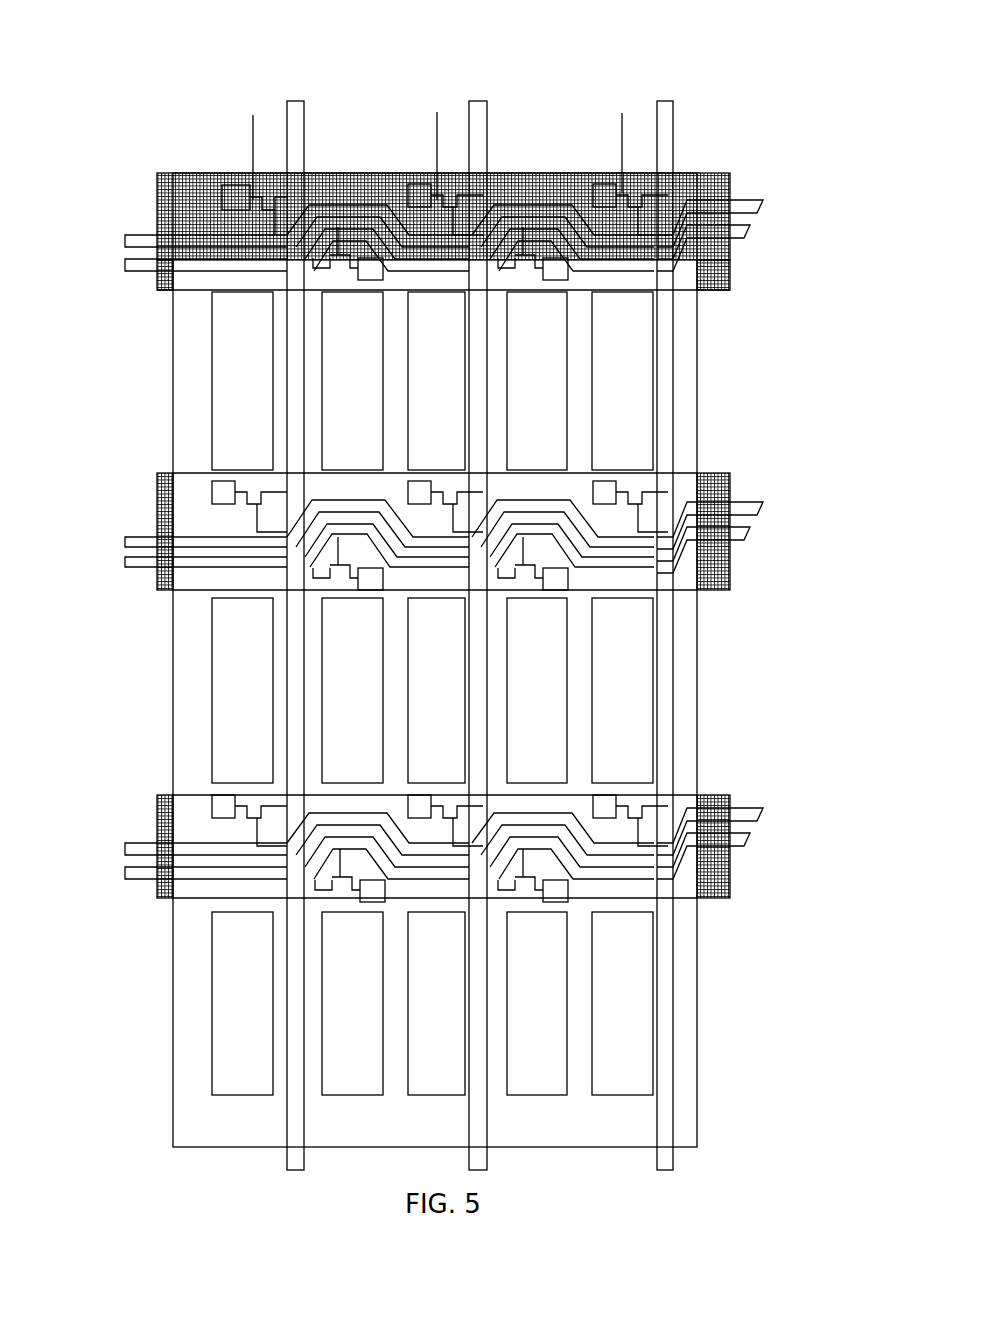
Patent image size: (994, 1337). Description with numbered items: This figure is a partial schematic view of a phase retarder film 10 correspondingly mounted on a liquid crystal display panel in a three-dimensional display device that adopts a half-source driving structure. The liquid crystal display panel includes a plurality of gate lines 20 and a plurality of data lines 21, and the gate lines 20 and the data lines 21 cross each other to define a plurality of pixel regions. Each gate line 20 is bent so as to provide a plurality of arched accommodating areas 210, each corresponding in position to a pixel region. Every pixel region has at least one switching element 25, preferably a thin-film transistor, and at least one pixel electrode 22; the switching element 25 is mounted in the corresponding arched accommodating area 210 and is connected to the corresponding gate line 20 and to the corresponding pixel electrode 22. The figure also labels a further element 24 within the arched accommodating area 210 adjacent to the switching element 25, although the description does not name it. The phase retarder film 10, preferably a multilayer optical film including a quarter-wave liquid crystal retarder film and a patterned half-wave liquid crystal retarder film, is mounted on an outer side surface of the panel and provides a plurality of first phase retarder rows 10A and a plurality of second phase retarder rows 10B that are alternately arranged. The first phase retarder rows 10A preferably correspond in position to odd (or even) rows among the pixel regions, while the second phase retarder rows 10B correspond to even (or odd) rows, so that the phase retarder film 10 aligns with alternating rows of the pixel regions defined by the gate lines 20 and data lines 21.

The phase retarder film 10 is at (762, 688).
The first phase retarder rows 10A is at (690, 298).
The second phase retarder rows 10B is at (690, 620).
The gate line 20 is at (125, 239).
The data line 21 is at (293, 120).
The pixel electrode 22 is at (212, 328).
The thin film transistor 24 is at (597, 188).
The switching element 25 is at (636, 193).
The arched accommodating area 210 is at (645, 213).